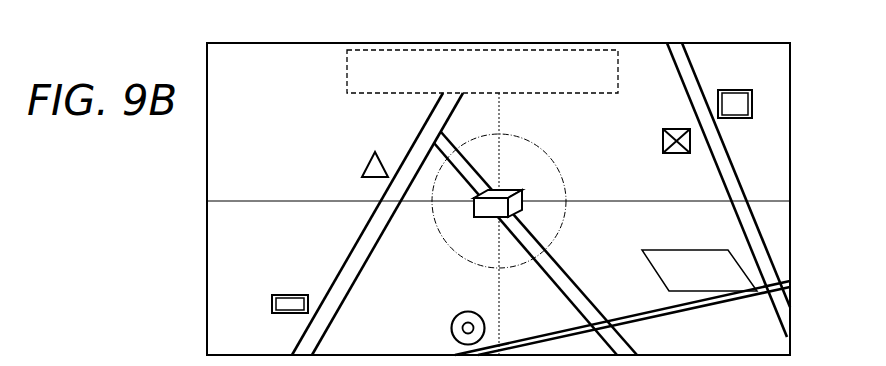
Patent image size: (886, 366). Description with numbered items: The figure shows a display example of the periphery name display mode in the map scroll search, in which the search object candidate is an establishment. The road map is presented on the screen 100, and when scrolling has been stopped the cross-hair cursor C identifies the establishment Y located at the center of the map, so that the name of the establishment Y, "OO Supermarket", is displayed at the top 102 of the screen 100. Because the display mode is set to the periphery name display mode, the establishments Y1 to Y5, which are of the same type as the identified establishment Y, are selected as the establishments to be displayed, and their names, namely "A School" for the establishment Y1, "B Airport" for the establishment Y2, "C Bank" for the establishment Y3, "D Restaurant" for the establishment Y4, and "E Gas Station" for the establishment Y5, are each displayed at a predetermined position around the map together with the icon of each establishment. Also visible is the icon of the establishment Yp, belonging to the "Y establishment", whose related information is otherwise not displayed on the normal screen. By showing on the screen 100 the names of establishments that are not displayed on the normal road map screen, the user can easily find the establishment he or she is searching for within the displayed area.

The screen 100 is at (791, 150).
The top of the screen 102 is at (347, 72).
The cross-hair cursor C is at (562, 172).
The establishment Y is at (475, 218).
The establishment Y1 is at (738, 116).
The establishment Y2 is at (675, 244).
The establishment Y3 is at (467, 312).
The establishment Y4 is at (362, 177).
The establishment Y5 is at (272, 313).
The icon of the establishment Yp is at (663, 151).